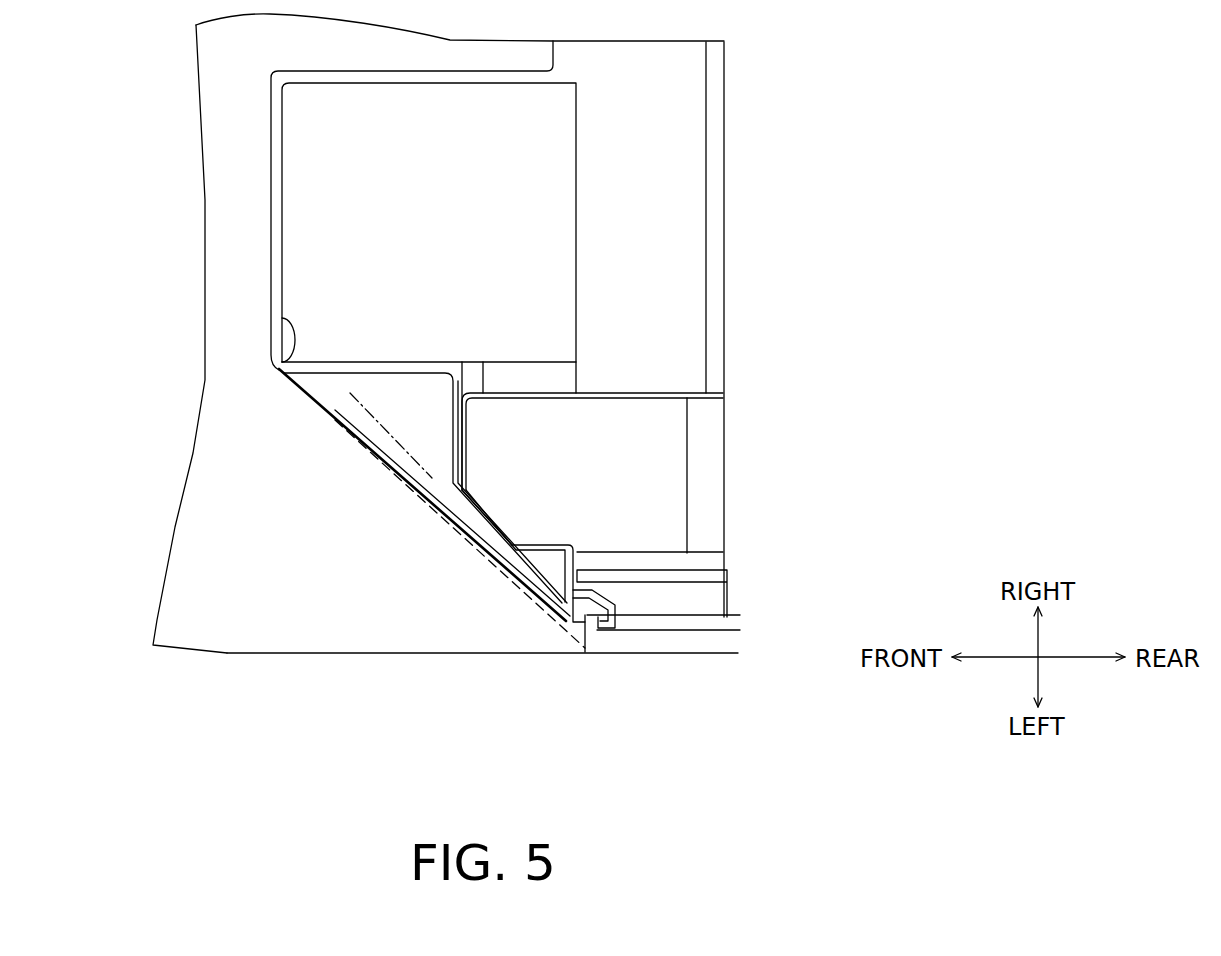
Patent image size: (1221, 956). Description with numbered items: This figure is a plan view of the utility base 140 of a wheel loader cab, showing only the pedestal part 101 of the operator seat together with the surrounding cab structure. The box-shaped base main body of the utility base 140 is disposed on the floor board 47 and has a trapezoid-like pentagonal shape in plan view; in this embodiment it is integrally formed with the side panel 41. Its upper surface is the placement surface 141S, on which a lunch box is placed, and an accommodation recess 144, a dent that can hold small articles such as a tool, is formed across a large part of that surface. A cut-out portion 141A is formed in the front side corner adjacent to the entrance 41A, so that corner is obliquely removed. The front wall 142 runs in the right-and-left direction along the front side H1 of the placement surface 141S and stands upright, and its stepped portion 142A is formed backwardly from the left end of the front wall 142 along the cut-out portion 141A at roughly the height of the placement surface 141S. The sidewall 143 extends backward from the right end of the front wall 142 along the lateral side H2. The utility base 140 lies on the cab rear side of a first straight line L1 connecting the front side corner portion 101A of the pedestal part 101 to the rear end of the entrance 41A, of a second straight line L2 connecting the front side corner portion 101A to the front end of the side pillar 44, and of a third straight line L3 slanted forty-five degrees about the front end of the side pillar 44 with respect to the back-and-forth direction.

The pedestal part 101 is at (312, 208).
The front side corner portion 101A is at (282, 318).
The floor board 47 is at (245, 553).
The entrance 41A is at (284, 646).
The side panel 41 is at (705, 642).
The side pillar 44 is at (633, 613).
The cut-out portion 141A is at (482, 526).
The placement surface 141S is at (712, 527).
The utility base 140 is at (873, 363).
The front wall 142 is at (467, 438).
The stepped portion 142A is at (493, 518).
The sidewall 143 is at (663, 392).
The accommodation recess 144 is at (642, 497).
The front side H1 is at (467, 429).
The lateral side H2 is at (570, 403).
The first straight line L1 is at (442, 519).
The second straight line L2 is at (416, 493).
The third straight line L3 is at (408, 455).